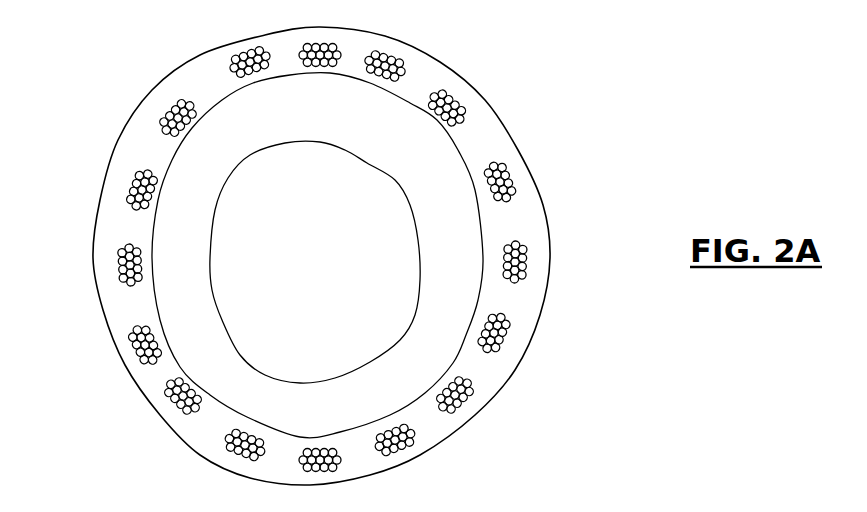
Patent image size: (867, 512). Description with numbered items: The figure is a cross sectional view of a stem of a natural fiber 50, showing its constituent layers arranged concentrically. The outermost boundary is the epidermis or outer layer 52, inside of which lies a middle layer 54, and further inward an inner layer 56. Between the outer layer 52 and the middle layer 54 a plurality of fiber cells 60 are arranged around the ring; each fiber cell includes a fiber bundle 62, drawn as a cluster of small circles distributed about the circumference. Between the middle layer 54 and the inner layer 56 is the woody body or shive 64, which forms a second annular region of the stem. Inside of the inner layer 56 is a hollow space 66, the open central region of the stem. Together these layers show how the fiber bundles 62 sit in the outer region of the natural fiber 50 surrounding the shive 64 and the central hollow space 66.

The natural fiber 50 is at (332, 254).
The outer layer 52 is at (92, 302).
The middle layer 54 is at (453, 363).
The inner layer 56 is at (423, 287).
The fiber cells 60 is at (379, 258).
The fiber bundles 62 is at (527, 270).
The shive 64 is at (378, 255).
The hollow space 66 is at (413, 262).